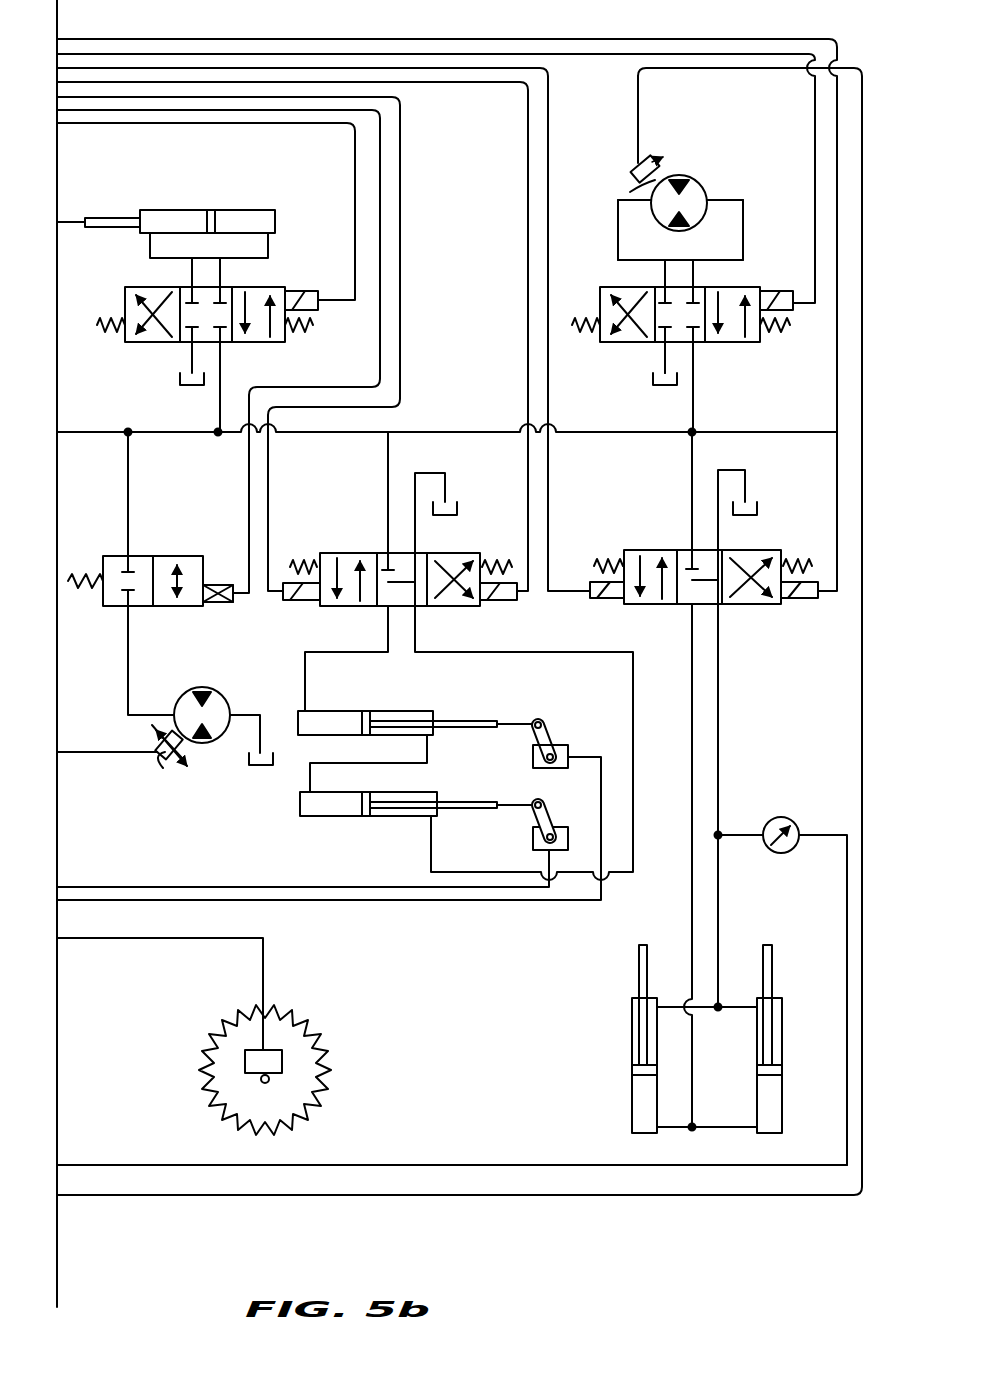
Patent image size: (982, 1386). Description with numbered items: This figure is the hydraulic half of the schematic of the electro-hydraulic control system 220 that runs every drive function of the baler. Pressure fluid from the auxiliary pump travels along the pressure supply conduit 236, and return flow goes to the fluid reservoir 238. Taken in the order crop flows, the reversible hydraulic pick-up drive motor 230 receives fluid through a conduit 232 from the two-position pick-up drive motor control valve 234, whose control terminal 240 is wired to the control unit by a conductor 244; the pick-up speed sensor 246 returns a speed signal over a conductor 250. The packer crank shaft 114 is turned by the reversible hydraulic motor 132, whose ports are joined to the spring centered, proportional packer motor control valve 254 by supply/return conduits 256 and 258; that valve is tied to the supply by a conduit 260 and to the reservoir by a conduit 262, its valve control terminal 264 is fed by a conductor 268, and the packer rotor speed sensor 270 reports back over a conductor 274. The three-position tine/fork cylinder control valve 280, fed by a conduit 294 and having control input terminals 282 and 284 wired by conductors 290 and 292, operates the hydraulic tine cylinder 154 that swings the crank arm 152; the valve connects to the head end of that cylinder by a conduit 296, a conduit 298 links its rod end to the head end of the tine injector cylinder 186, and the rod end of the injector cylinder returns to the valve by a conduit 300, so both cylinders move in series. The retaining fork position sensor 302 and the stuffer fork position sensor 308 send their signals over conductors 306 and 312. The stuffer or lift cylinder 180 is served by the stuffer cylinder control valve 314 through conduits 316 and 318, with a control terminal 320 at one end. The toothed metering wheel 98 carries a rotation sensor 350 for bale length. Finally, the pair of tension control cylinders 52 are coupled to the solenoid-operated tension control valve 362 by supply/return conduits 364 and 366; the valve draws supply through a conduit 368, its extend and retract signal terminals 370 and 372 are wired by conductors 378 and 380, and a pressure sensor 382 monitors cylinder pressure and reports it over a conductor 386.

The tension control cylinders 52 is at (640, 1133).
The toothed metering wheel 98 is at (330, 1080).
The crank shaft 114 is at (637, 180).
The reversible hydraulic motor 132 is at (697, 174).
The crank arm 152 is at (552, 728).
The hydraulic tine cylinder 154 is at (415, 712).
The stuffer or lift cylinder 180 is at (238, 208).
The tine injector cylinder 186 is at (398, 816).
The electro-hydraulic control system 220 is at (660, 1248).
The reversible hydraulic pick-up drive motor 230 is at (220, 698).
The conduit 232 is at (129, 655).
The pick-up drive motor control valve 234 is at (165, 556).
The pressure supply conduit 236 is at (182, 430).
The fluid reservoir 238 is at (750, 508).
The control terminal 240 is at (218, 606).
The conductor 244 is at (249, 500).
The pick-up speed sensor 246 is at (170, 770).
The conductor 250 is at (68, 753).
The packer motor control valve 254 is at (740, 286).
The supply/return conduit 256 is at (618, 248).
The supply/return conduit 258 is at (744, 232).
The conduit 260 is at (700, 410).
The conduit 262 is at (660, 351).
The valve control terminal 264 is at (797, 312).
The conductor 268 is at (815, 110).
The packer rotor speed sensor 270 is at (637, 160).
The conductor 274 is at (505, 1200).
The tine/fork cylinder control valve 280 is at (367, 608).
The control input terminal 282 is at (515, 604).
The control input terminal 284 is at (283, 583).
The conductor 290 is at (527, 325).
The conductor 292 is at (405, 385).
The conduit 294 is at (386, 456).
The cylinder line 296 is at (333, 653).
The conduit 298 is at (378, 762).
The cylinder line 300 is at (462, 653).
The retaining fork position sensor 302 is at (533, 750).
The conductor 306 is at (600, 823).
The stuffer fork position sensor 308 is at (533, 838).
The conductor 312 is at (345, 886).
The stuffer cylinder control valve 314 is at (170, 344).
The conduit 316 is at (149, 252).
The conduit 318 is at (272, 240).
The control terminal 320 is at (322, 312).
The rotation sensor 350 is at (273, 1047).
The tension control valve 362 is at (665, 550).
The supply/return conduit 364 is at (692, 760).
The supply/return conduit 366 is at (718, 760).
The conduit 368 is at (692, 452).
The extend signal terminal 370 is at (600, 606).
The retract signal terminal 372 is at (815, 604).
The conductor 378 is at (548, 510).
The conductor 380 is at (834, 452).
The pressure sensor 382 is at (785, 817).
The conductor 386 is at (505, 1165).